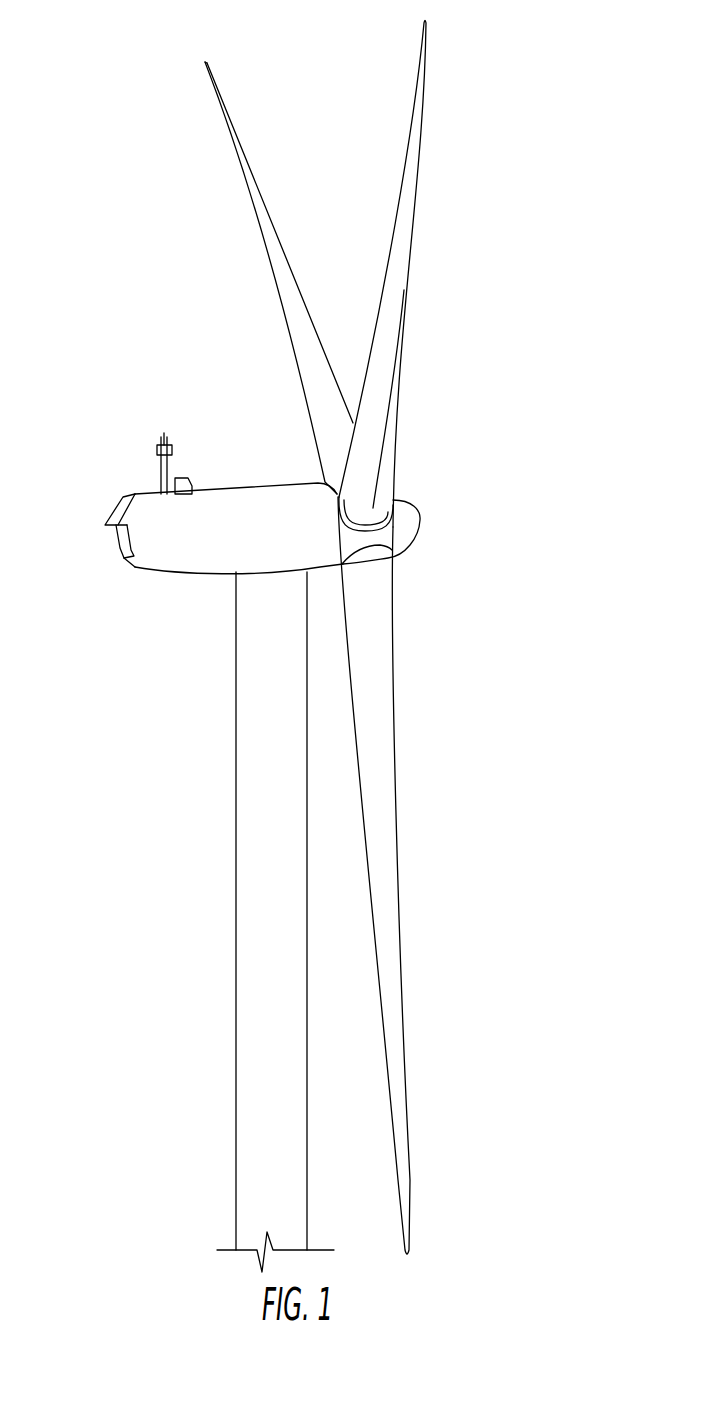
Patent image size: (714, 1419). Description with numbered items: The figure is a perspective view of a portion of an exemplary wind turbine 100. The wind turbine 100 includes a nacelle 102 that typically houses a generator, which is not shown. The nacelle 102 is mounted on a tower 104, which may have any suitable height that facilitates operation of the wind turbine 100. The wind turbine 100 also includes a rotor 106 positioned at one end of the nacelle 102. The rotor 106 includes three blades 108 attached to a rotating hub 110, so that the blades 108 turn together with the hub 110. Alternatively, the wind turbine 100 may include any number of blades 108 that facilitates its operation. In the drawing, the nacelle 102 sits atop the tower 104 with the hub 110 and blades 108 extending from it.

The wind turbine 100 is at (122, 163).
The nacelle 102 is at (166, 578).
The tower 104 is at (235, 853).
The rotor 106 is at (540, 249).
The blades 108 is at (242, 147).
The rotating hub 110 is at (417, 535).